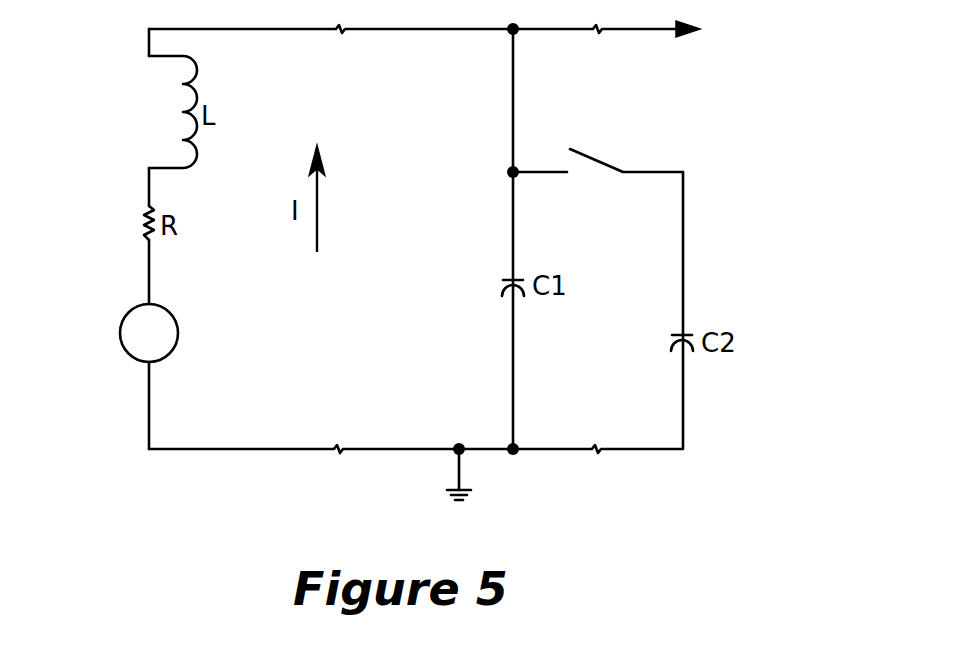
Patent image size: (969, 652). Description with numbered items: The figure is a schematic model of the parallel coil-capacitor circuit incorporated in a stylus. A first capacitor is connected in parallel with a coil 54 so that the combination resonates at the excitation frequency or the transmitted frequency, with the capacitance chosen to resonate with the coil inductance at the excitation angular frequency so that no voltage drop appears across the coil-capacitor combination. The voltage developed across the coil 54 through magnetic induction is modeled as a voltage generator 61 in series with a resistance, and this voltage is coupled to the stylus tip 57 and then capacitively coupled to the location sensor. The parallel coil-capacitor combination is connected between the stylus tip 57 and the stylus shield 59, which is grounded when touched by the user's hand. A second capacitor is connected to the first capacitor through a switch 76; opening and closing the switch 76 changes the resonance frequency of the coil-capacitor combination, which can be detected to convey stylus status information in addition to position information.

The coil 54 is at (192, 130).
The stylus tip 57 is at (709, 30).
The stylus shield 59 is at (459, 491).
The voltage generator 61 is at (121, 337).
The switch 76 is at (597, 158).